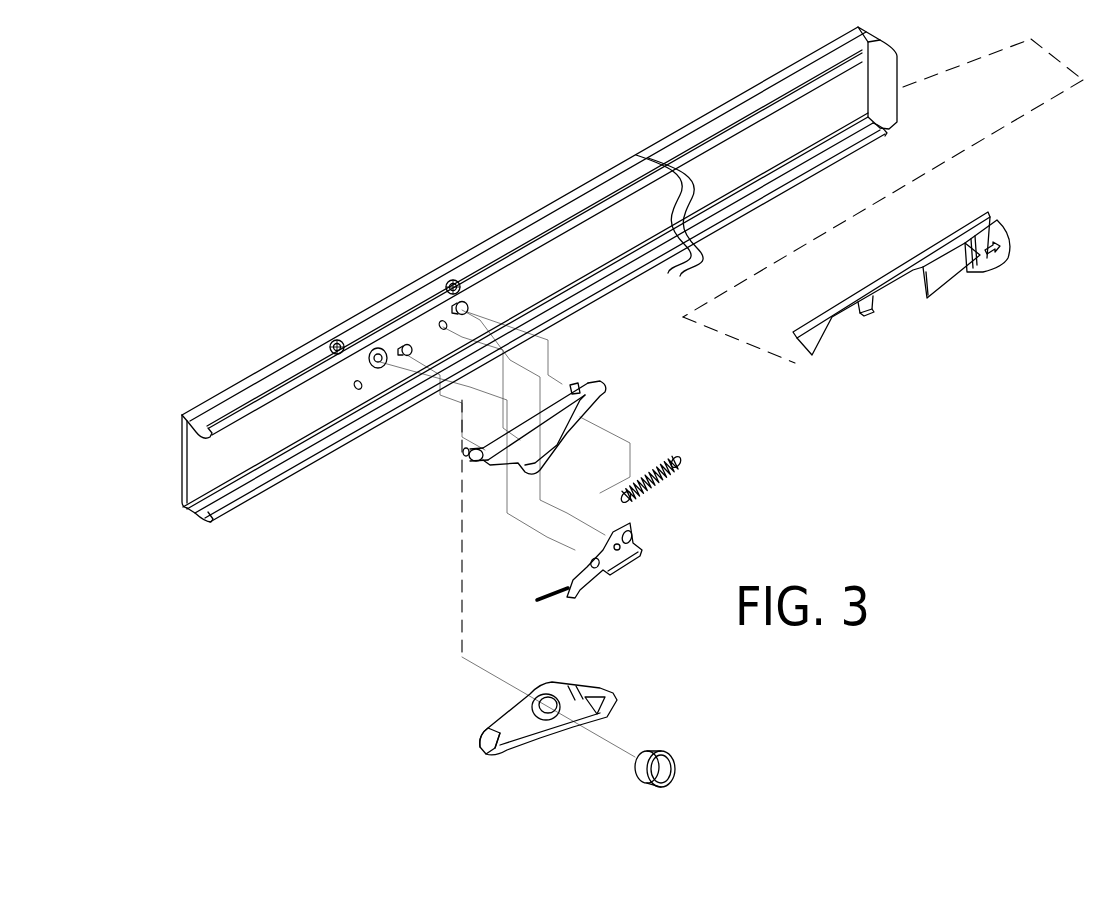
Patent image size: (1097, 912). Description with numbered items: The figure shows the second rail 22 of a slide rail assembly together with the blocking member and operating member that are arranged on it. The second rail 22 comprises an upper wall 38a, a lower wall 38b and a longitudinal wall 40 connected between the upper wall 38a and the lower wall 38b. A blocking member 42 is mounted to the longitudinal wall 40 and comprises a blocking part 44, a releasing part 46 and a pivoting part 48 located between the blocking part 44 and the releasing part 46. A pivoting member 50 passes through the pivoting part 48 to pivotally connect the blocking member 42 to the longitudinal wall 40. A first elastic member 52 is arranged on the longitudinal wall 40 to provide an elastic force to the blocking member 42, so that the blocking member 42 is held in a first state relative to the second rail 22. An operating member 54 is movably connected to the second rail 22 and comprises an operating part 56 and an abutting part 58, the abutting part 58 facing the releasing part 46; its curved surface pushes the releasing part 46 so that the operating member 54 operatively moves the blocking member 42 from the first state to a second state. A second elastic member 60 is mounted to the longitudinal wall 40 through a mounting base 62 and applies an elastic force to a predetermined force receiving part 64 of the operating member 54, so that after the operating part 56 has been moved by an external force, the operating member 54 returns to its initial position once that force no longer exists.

The second rail 22 is at (492, 291).
The upper wall 38a is at (252, 392).
The lower wall 38b is at (277, 468).
The longitudinal wall 40 is at (185, 463).
The blocking member 42 is at (550, 720).
The blocking part 44 is at (617, 700).
The releasing part 46 is at (495, 717).
The pivoting part 48 is at (543, 697).
The pivoting member 50 is at (663, 767).
The first elastic member 52 is at (550, 588).
The operating member 54 is at (955, 288).
The operating part 56 is at (997, 250).
The abutting part 58 is at (817, 343).
The second elastic member 60 is at (679, 477).
The mounting base 62 is at (601, 393).
The force receiving part 64 is at (865, 310).